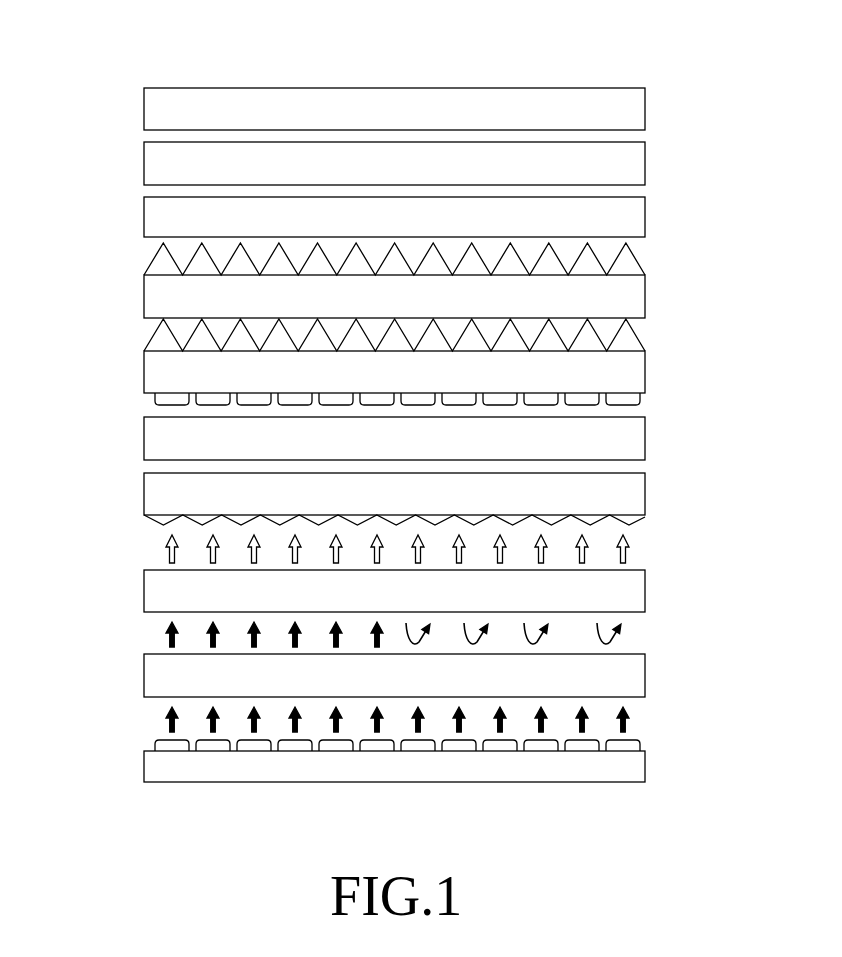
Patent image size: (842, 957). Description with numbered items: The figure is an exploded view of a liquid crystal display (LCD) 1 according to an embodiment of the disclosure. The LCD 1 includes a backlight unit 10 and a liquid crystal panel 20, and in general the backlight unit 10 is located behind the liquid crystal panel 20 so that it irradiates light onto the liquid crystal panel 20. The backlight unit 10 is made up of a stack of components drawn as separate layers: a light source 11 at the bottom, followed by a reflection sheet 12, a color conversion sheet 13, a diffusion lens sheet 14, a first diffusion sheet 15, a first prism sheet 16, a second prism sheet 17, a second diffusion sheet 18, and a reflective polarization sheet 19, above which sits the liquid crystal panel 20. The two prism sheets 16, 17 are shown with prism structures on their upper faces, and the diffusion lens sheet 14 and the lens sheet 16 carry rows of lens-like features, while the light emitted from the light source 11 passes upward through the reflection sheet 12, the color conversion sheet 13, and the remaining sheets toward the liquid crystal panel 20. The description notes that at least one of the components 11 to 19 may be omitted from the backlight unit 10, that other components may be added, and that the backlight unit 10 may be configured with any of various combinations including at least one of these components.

The liquid crystal display 1 is at (373, 14).
The backlight unit 10 is at (385, 462).
The light source 11 is at (144, 766).
The reflection sheet 12 is at (144, 676).
The color conversion sheet 13 is at (144, 591).
The diffusion lens sheet 14 is at (144, 494).
The diffusion sheet 15 is at (144, 438).
The prism sheet 16 is at (144, 372).
The prism sheet 17 is at (144, 296).
The diffusion sheet 18 is at (144, 217).
The reflective polarization sheet 19 is at (144, 164).
The liquid crystal panel 20 is at (645, 108).